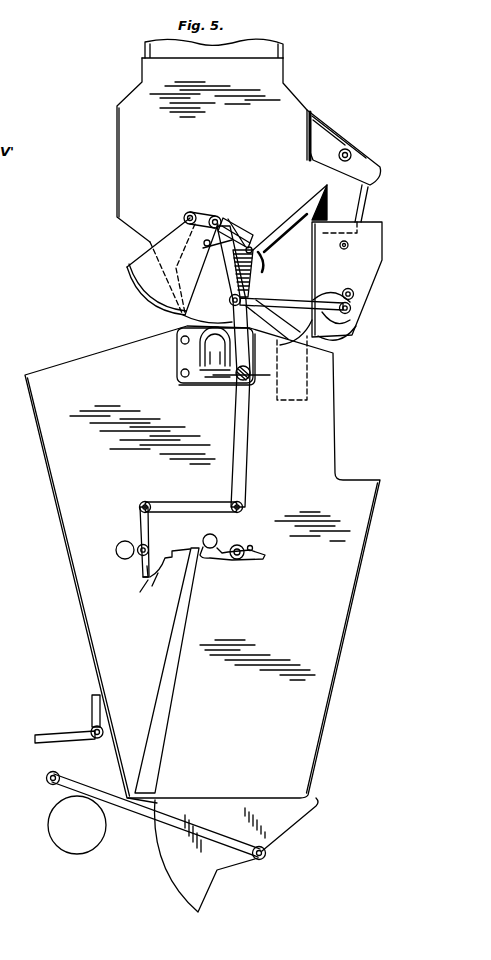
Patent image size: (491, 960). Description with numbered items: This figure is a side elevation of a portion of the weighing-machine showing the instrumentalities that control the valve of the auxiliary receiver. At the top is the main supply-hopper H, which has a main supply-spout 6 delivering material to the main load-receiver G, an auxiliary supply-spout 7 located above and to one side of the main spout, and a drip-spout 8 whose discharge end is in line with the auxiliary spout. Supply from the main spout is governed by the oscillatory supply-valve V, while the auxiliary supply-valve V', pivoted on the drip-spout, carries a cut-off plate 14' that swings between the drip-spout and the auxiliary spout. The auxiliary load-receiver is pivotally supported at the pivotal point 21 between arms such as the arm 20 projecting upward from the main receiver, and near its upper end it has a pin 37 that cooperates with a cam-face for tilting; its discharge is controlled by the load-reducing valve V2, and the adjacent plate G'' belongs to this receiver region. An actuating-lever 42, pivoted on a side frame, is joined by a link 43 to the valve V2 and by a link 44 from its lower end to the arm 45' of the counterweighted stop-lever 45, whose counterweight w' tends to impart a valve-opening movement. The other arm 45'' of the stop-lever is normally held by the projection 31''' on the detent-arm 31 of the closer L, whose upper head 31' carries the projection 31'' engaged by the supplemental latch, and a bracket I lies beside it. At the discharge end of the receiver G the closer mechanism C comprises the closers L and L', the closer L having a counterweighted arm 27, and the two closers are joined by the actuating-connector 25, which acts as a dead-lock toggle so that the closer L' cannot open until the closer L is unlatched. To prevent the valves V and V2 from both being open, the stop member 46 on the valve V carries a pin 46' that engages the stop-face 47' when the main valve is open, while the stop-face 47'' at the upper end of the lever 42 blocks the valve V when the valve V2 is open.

The main supply-hopper H is at (222, 176).
The auxiliary supply-valve V' is at (346, 147).
The drip-spout 8 is at (323, 135).
The auxiliary supply-spout 7 is at (366, 208).
The side plate G'' is at (352, 279).
The projection or pin 37 is at (348, 243).
The pivotal point 21 is at (346, 289).
The link 43 is at (273, 302).
The load-reducing valve V2 is at (353, 329).
The arm 20 is at (288, 322).
The actuating-lever 42 is at (241, 435).
The stop member 46 is at (207, 210).
The cut-off plate 14' is at (188, 201).
The stop-face 47'' is at (236, 213).
The stop-face 47' is at (230, 262).
The pin or projection 46' is at (261, 273).
The supply-valve V is at (163, 266).
The main supply-spout 6 is at (207, 307).
The main load-receiver G is at (202, 562).
The link 44 is at (197, 502).
The arm 45' is at (124, 542).
The counterweighted stop-lever 45 is at (157, 541).
The counterweight w' is at (111, 550).
The arm 45'' is at (125, 577).
The detent-arm 31 is at (174, 670).
The lever head 31' is at (177, 547).
The projection 31'' is at (154, 588).
The projection 31''' is at (129, 593).
The bracket I is at (220, 553).
The actuating-connector 25 is at (172, 813).
The counterweighted arm 27 is at (77, 825).
The closer L is at (136, 825).
The closer L' is at (281, 824).
The closer mechanism C is at (206, 856).